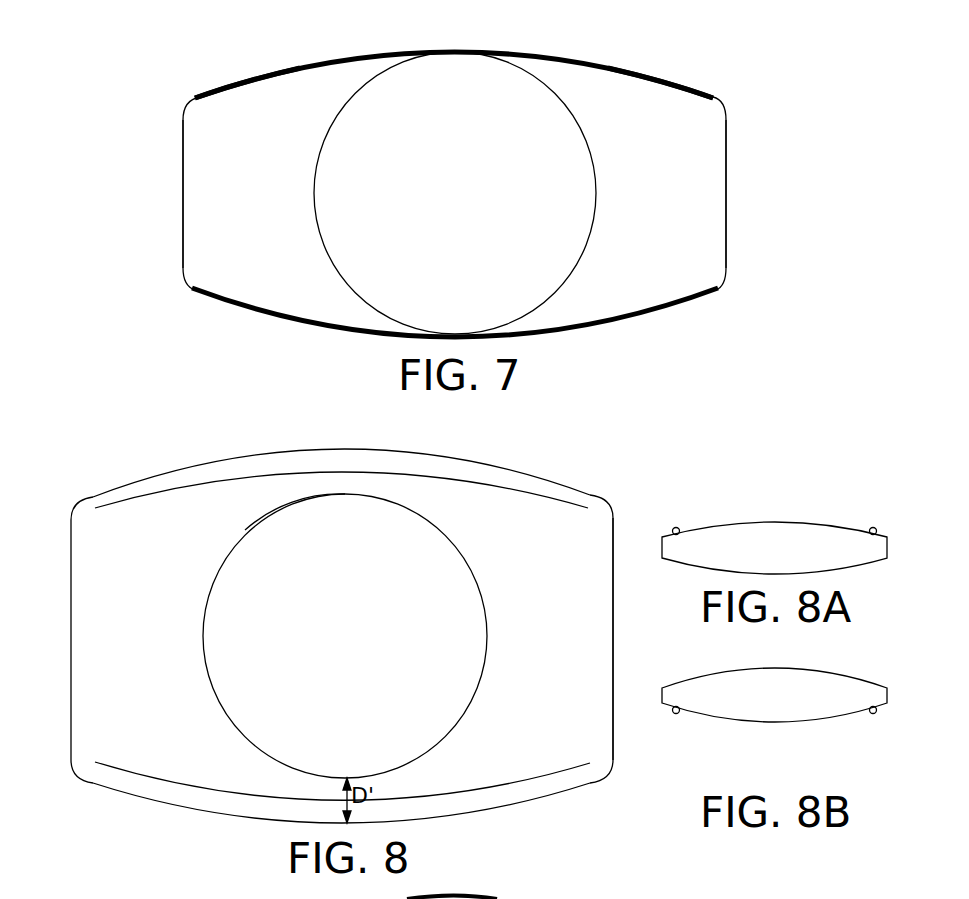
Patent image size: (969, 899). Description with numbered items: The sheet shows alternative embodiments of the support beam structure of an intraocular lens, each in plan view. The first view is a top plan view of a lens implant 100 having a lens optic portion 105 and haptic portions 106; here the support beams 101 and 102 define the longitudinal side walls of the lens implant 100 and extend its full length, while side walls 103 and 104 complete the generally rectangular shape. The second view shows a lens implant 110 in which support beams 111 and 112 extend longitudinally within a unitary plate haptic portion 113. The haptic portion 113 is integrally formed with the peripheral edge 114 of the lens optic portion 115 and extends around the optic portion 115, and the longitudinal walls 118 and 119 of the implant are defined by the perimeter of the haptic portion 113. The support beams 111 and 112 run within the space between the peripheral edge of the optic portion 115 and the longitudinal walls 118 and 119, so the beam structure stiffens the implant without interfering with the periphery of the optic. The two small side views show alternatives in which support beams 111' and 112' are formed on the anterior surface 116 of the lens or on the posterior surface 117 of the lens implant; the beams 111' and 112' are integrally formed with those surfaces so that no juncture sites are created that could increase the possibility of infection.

In FIG. 7, the lens implant 100 is at (740, 143).
In FIG. 7, the support beam 101 is at (541, 36).
In FIG. 7, the support beam 102 is at (635, 325).
In FIG. 7, the side wall 103 is at (727, 248).
In FIG. 7, the side wall 104 is at (183, 172).
In FIG. 7, the lens optic portion 105 is at (452, 52).
In FIG. 7, the haptic portions 106 is at (293, 83).
In FIG. 8, the lens implant 110 is at (100, 580).
In FIG. 8, the support beam 111 is at (342, 813).
In FIG. 8, the support beam 112 is at (341, 466).
In FIG. 8, the unitary plate haptic portion 113 is at (613, 638).
In FIG. 8, the peripheral edge 114 is at (203, 630).
In FIG. 8, the lens optic portion 115 is at (247, 563).
In FIG. 8, the longitudinal wall 118 is at (393, 432).
In FIG. 8, the longitudinal wall 119 is at (530, 803).
In FIG. 8A, the support beam 111' is at (701, 503).
In FIG. 8B, the support beam 111' is at (663, 733).
In FIG. 8A, the support beam 112' is at (871, 503).
In FIG. 8B, the support beam 112' is at (858, 737).
In FIG. 8A, the anterior surface 116 is at (773, 520).
In FIG. 8B, the posterior surface 117 is at (775, 722).